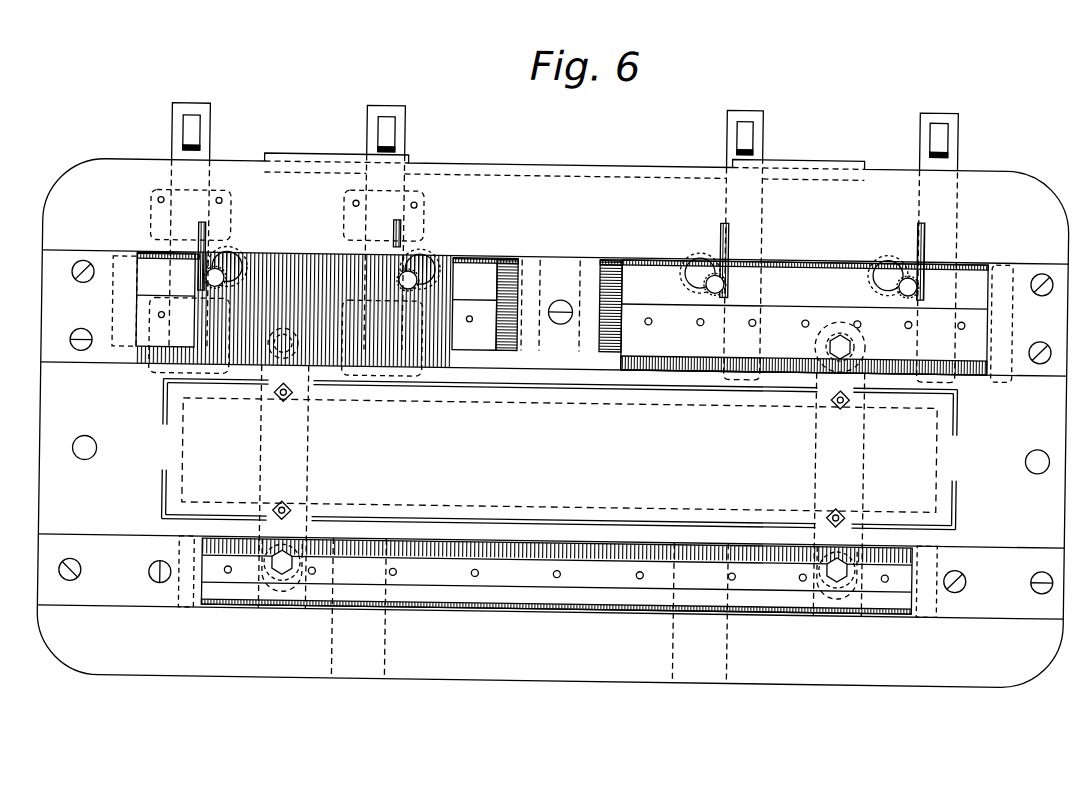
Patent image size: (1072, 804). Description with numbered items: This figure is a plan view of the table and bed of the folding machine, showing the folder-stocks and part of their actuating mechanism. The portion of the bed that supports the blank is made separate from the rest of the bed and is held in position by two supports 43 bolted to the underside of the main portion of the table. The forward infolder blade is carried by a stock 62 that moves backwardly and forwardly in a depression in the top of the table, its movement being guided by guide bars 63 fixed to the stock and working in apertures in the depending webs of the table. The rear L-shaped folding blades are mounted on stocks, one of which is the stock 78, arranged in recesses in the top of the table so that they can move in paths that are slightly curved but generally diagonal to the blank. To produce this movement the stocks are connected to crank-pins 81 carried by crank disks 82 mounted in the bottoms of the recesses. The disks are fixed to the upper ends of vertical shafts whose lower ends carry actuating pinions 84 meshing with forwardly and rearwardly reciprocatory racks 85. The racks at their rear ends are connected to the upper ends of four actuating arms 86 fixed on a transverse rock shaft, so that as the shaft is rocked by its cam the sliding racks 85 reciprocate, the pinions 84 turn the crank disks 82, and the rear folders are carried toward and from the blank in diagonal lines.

The supports 43 is at (309, 458).
The stock 62 is at (268, 599).
The guide bars 63 is at (383, 644).
The stock 78 is at (146, 351).
The crank-pins 81 is at (218, 279).
The crank disks 82 is at (228, 256).
The actuating pinions 84 is at (150, 255).
The racks 85 is at (206, 135).
The actuating arms 86 is at (187, 121).